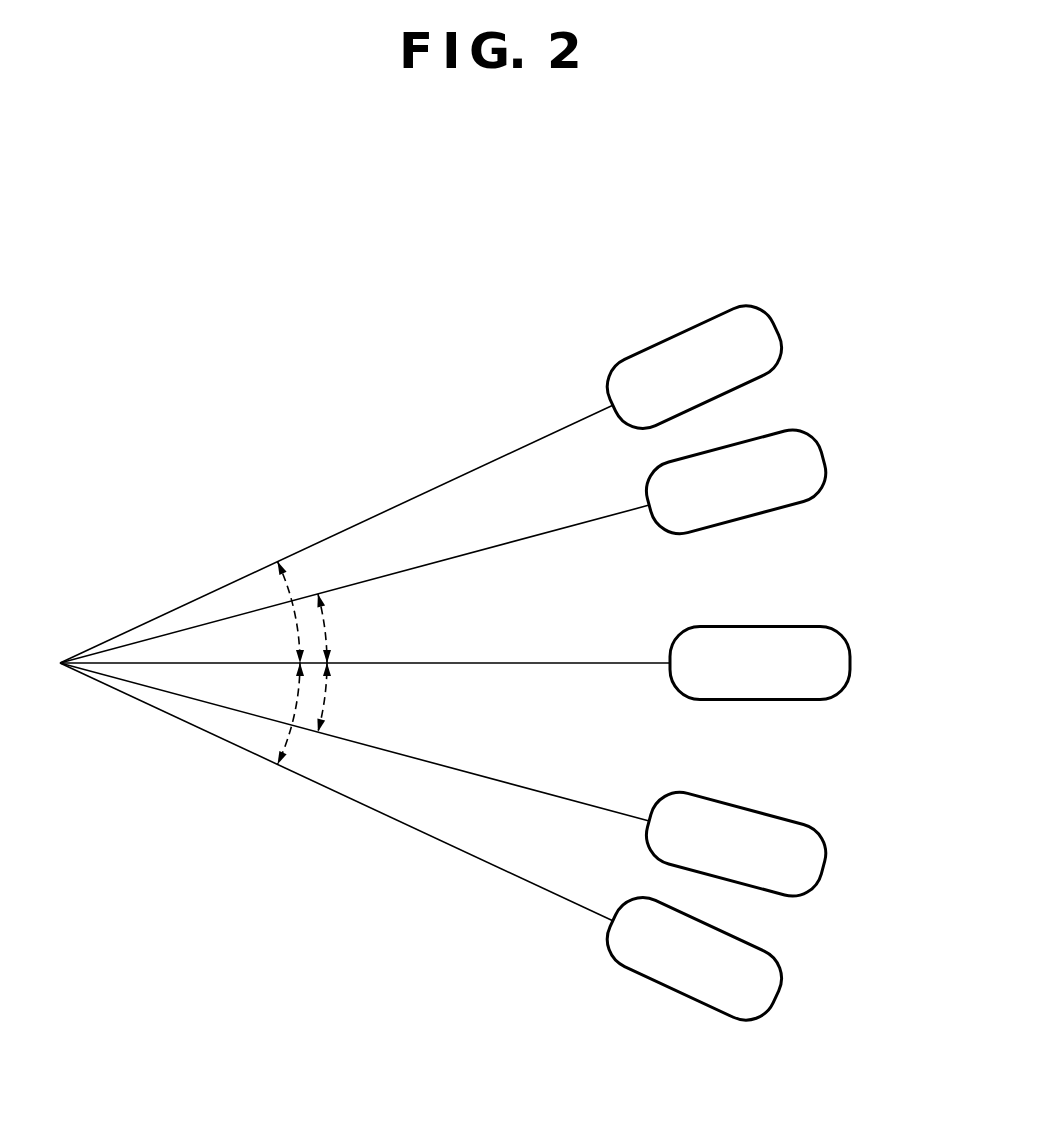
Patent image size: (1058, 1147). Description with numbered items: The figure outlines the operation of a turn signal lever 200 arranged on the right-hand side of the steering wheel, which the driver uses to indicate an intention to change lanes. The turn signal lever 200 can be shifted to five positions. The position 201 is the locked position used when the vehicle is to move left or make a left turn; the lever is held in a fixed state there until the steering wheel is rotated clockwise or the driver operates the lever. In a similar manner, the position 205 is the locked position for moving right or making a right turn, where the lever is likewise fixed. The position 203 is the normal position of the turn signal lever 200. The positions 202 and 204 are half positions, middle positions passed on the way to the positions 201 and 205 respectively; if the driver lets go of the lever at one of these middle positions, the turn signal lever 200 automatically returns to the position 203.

The turn signal lever 200 is at (874, 236).
The position 201 is at (775, 333).
The position 202 is at (826, 462).
The position 203 is at (852, 660).
The position 204 is at (832, 870).
The position 205 is at (778, 995).